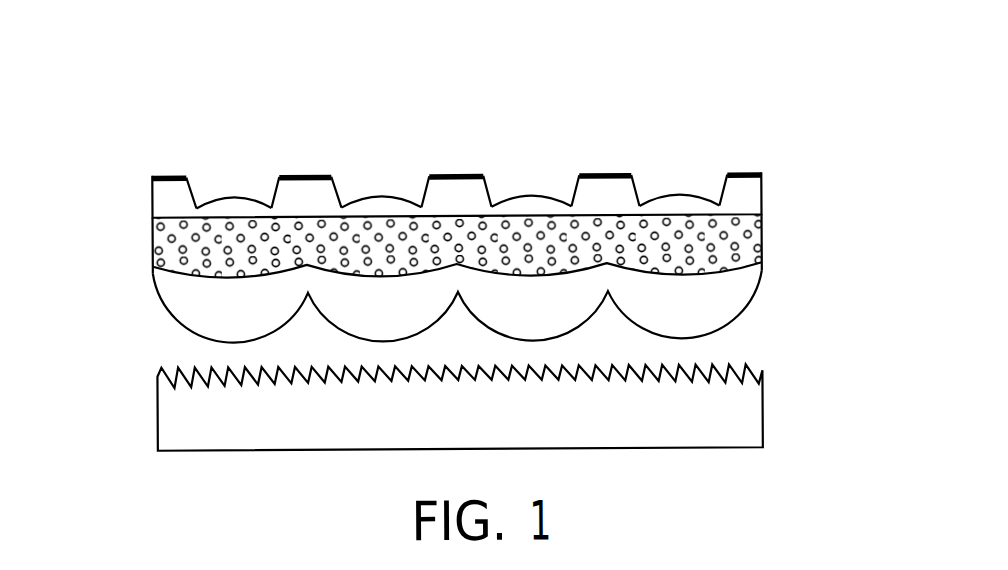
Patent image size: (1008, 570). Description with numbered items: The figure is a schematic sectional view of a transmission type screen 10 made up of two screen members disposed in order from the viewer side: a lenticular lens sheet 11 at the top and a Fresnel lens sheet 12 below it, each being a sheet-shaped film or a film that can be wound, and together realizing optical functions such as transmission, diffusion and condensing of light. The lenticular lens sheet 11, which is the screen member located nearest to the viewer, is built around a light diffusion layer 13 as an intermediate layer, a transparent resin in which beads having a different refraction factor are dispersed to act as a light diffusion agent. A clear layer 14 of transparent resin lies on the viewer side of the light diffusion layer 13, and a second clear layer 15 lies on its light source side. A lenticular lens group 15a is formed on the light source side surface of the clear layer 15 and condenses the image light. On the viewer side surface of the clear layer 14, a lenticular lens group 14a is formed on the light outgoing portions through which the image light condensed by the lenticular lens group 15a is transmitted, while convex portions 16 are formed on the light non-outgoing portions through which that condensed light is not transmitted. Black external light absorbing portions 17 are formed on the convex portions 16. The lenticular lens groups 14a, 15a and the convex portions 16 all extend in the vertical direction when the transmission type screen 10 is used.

The transmission type screen 10 is at (651, 89).
The lenticular lens sheet 11 is at (120, 219).
The Fresnel lens sheet 12 is at (138, 418).
The light diffusion layer 13 is at (747, 240).
The clear layer 14 is at (745, 205).
The lenticular lens group 14a is at (688, 197).
The clear layer 15 is at (745, 283).
The lenticular lens group 15a is at (745, 312).
The convex portions 16 is at (625, 197).
The black external light absorbing portions 17 is at (602, 175).